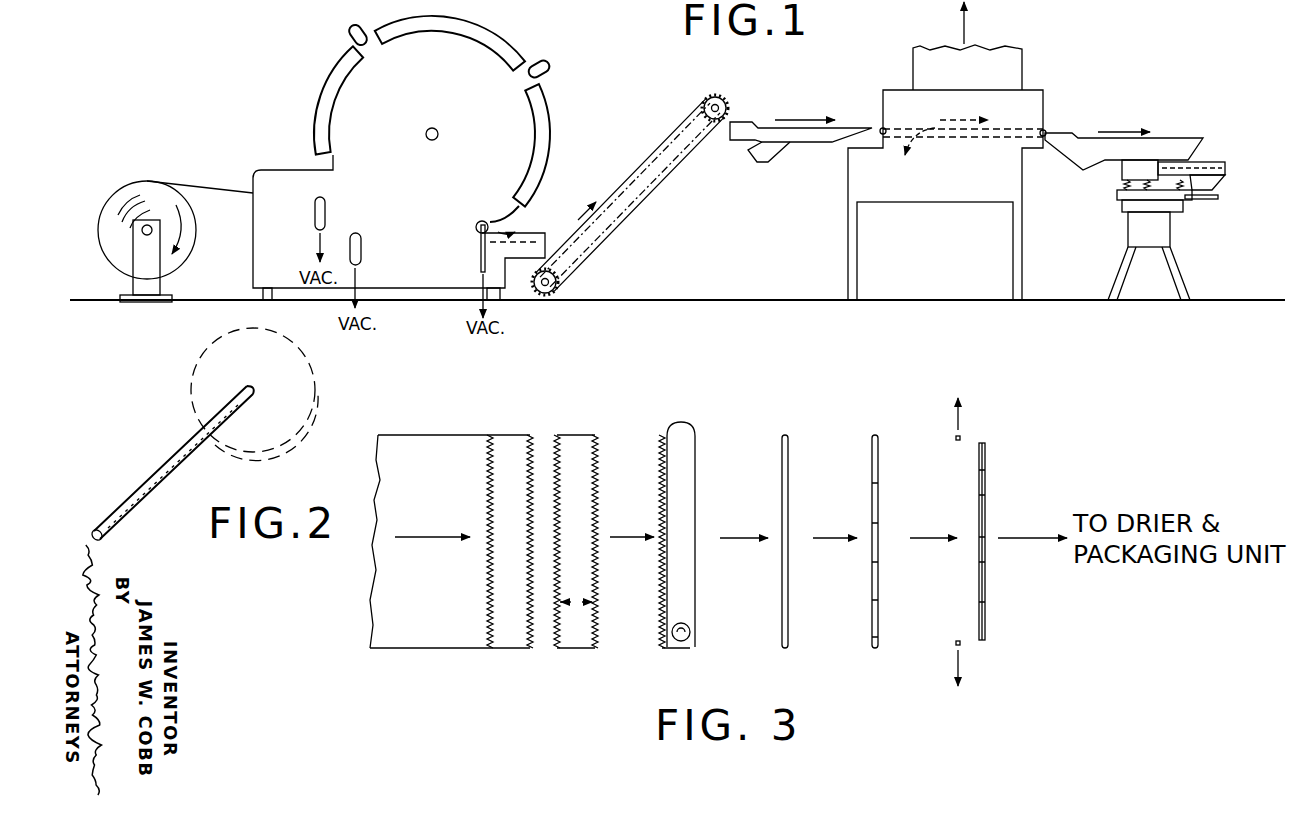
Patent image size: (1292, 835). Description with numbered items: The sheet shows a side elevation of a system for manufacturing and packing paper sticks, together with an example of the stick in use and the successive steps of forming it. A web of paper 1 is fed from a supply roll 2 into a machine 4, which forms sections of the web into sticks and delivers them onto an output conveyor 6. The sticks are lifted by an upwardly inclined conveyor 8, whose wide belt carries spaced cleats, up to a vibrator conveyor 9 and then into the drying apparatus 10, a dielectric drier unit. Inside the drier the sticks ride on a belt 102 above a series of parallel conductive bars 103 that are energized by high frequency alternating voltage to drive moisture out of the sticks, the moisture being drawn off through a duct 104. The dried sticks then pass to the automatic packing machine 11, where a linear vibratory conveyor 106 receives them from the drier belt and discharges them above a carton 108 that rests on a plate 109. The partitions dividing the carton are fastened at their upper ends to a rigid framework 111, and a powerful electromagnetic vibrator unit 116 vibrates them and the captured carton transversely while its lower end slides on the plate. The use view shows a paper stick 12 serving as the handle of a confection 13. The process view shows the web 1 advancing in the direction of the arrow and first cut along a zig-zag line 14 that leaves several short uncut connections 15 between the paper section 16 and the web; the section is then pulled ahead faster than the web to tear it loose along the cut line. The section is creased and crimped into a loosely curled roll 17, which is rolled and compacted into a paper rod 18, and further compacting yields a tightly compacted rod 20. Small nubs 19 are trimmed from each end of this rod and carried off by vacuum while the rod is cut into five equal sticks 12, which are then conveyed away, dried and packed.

In FIG. 1, the web of paper 1 is at (253, 193).
In FIG. 3, the web of paper 1 is at (428, 630).
In FIG. 1, the supply roll 2 is at (127, 210).
In FIG. 1, the machine 4 is at (322, 60).
In FIG. 1, the output conveyor 6 is at (530, 226).
In FIG. 1, the upwardly inclined conveyor 8 is at (642, 160).
In FIG. 1, the vibrator conveyor 9 is at (796, 135).
In FIG. 1, the drying apparatus 10 is at (895, 108).
In FIG. 1, the automatic packing machine 11 is at (1146, 122).
In FIG. 2, the paper stick 12 is at (176, 455).
In FIG. 3, the paper stick 12 is at (985, 490).
In FIG. 2, the confection 13 is at (318, 385).
In FIG. 3, the zig-zag line 14 is at (488, 460).
In FIG. 3, the uncut connections 15 is at (489, 482).
In FIG. 3, the paper section 16 is at (572, 632).
In FIG. 3, the loosely curled roll 17 is at (682, 610).
In FIG. 3, the paper rod 18 is at (787, 633).
In FIG. 3, the nubs 19 is at (962, 437).
In FIG. 3, the tightly compacted rod 20 is at (877, 633).
In FIG. 1, the belt 102 is at (1022, 124).
In FIG. 1, the conductive bars 103 is at (919, 153).
In FIG. 1, the duct 104 is at (1010, 75).
In FIG. 1, the linear vibratory conveyor 106 is at (1110, 148).
In FIG. 1, the carton 108 is at (1210, 178).
In FIG. 1, the plate 109 is at (1210, 200).
In FIG. 1, the rigid framework 111 is at (1215, 163).
In FIG. 1, the electromagnetic vibrator unit 116 is at (1120, 176).